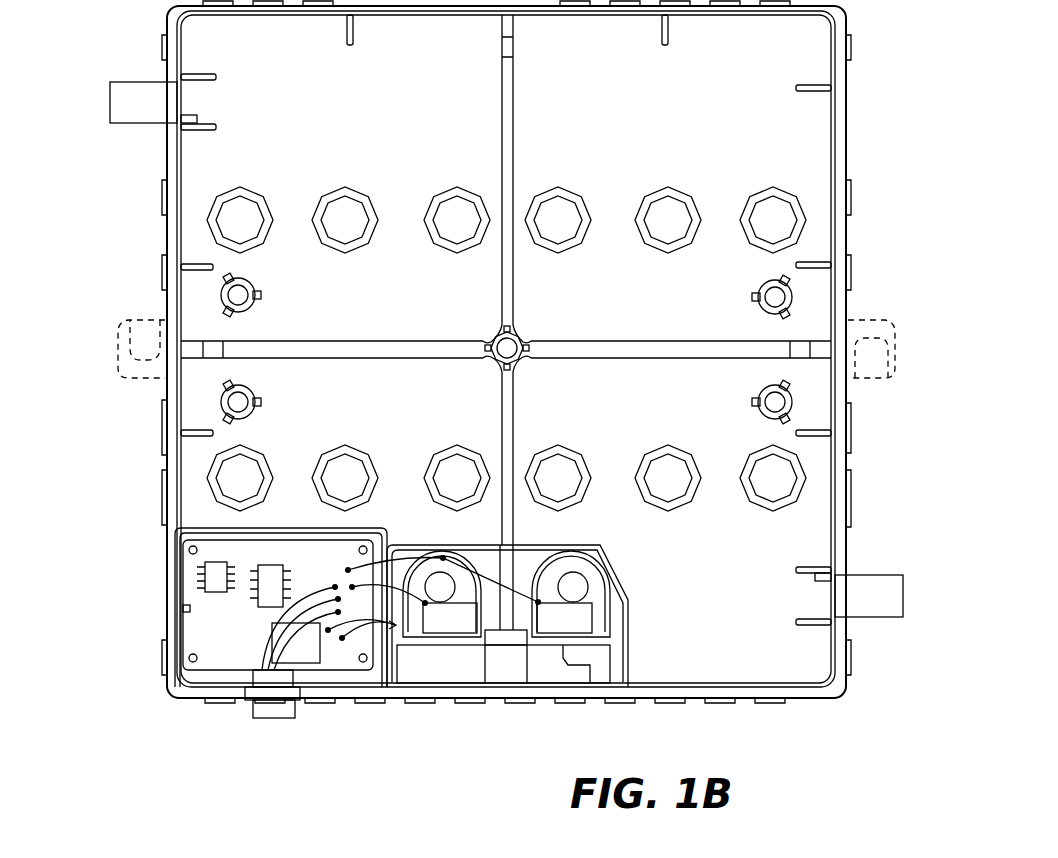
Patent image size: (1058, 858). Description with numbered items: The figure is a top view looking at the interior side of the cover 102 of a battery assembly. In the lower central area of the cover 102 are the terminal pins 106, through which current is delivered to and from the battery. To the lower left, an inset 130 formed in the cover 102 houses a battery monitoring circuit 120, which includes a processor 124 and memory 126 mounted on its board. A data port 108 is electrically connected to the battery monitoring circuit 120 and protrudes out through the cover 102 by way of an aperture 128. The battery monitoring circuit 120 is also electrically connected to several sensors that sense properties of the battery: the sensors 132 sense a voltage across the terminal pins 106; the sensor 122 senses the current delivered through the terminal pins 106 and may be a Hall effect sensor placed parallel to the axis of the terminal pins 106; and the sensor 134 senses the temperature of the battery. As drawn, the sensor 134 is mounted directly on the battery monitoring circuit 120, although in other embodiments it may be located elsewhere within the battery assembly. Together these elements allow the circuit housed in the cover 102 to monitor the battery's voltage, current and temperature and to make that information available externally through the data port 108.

The cover 102 is at (165, 247).
The terminal pins 106 is at (410, 700).
The data port 108 is at (277, 720).
The battery monitoring circuit 120 is at (210, 672).
The sensor 122 is at (378, 660).
The processor 124 is at (277, 565).
The memory 126 is at (213, 592).
The aperture 128 is at (243, 683).
The inset 130 is at (267, 526).
The sensors 132 is at (420, 555).
The sensor 134 is at (296, 644).